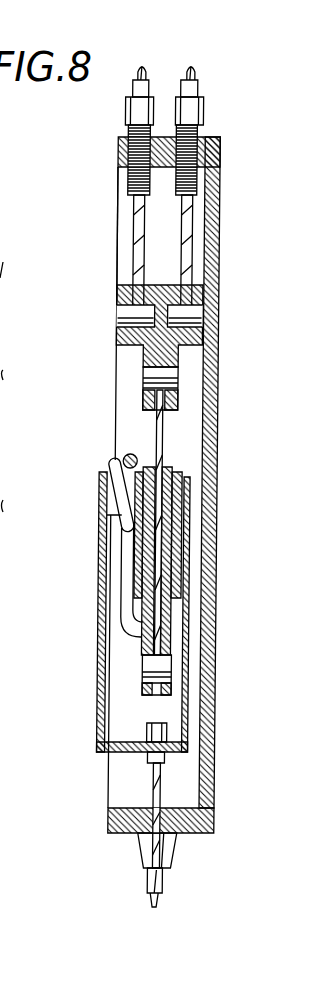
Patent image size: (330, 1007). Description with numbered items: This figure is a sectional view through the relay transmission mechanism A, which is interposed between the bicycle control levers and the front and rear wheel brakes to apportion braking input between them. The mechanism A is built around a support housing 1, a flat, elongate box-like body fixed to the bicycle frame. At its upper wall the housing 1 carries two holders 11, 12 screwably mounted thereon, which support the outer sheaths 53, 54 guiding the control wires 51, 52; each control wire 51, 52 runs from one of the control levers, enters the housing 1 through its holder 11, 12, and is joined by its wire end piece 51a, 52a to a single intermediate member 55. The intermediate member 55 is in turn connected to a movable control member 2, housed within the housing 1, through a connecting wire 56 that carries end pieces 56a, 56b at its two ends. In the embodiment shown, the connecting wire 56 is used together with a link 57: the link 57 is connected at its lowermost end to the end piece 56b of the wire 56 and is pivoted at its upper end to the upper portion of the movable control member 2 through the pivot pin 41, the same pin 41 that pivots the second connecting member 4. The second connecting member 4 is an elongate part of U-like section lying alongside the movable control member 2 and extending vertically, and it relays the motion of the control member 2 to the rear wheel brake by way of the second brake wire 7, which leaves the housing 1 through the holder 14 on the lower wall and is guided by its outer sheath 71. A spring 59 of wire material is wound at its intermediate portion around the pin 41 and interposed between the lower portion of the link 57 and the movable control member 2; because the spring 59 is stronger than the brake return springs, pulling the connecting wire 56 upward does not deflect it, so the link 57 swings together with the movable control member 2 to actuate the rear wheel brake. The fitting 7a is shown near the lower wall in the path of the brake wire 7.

The support housing 1 is at (222, 200).
The movable control member 2 is at (135, 553).
The second connecting member 4 is at (100, 545).
The pivot pin 41 is at (108, 507).
The second brake wire 7 is at (160, 795).
The rod holder 7a is at (168, 728).
The outer sheath 71 is at (162, 888).
The holder 11 is at (128, 112).
The holder 12 is at (200, 113).
The holder 14 is at (162, 855).
The control wire 51 is at (133, 228).
The wire end piece 51a is at (128, 312).
The control wire 52 is at (193, 247).
The wire end piece 52a is at (192, 310).
The outer sheath 53 is at (133, 88).
The outer sheath 54 is at (192, 88).
The intermediate member 55 is at (180, 357).
The connecting wire 56 is at (163, 440).
The end piece 56a is at (167, 383).
The end piece 56b is at (167, 663).
The link 57 is at (172, 617).
The spring 59 is at (122, 466).
The relay transmission mechanism A is at (10, 183).